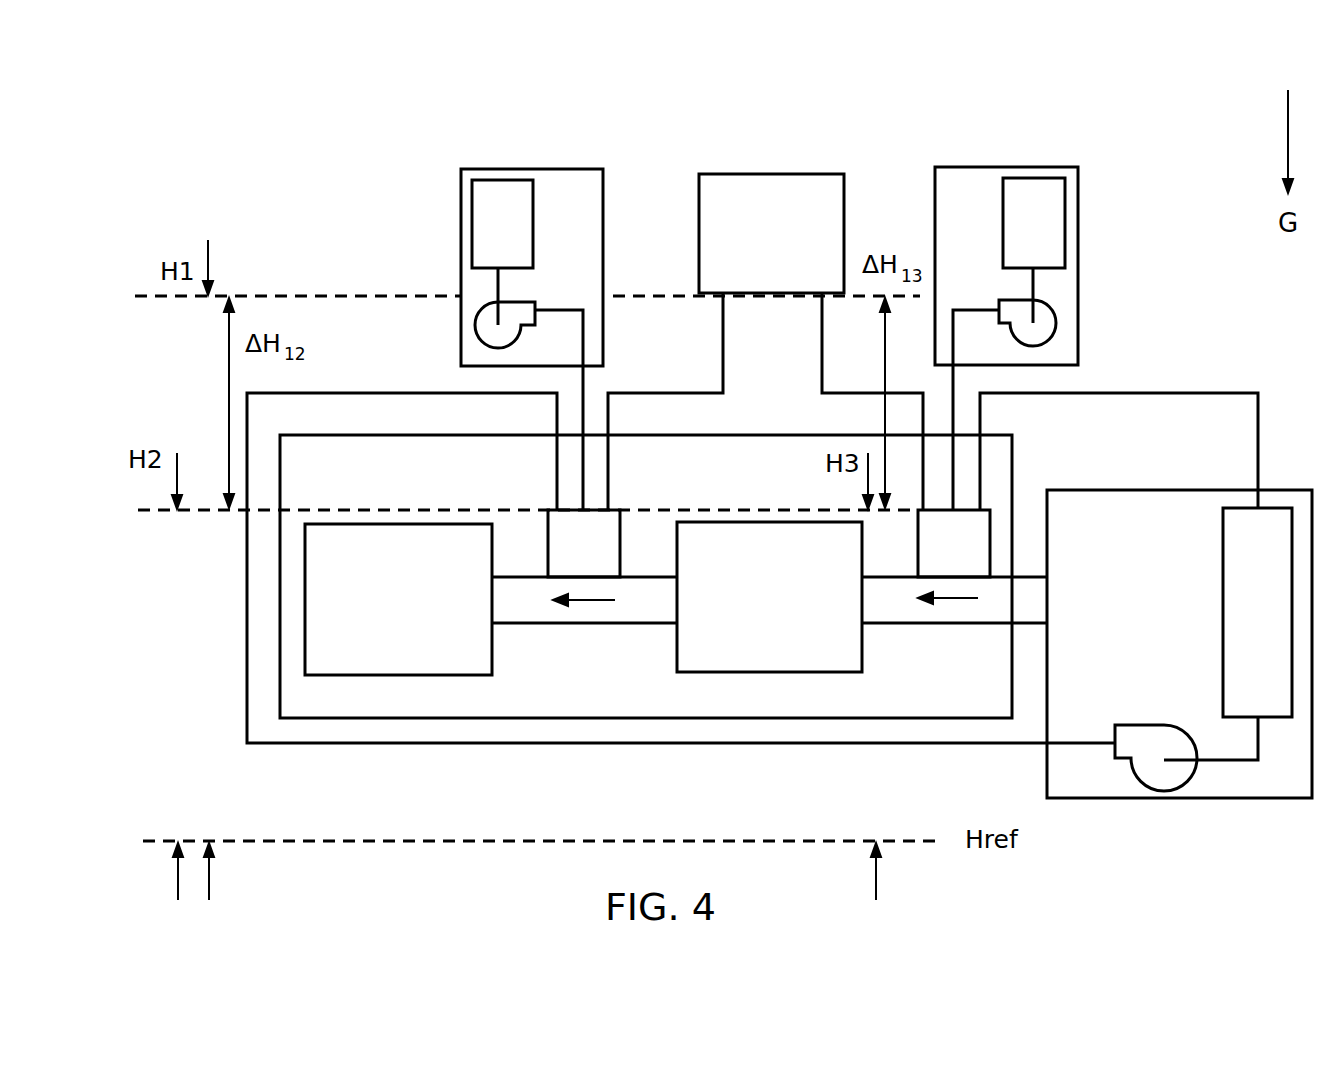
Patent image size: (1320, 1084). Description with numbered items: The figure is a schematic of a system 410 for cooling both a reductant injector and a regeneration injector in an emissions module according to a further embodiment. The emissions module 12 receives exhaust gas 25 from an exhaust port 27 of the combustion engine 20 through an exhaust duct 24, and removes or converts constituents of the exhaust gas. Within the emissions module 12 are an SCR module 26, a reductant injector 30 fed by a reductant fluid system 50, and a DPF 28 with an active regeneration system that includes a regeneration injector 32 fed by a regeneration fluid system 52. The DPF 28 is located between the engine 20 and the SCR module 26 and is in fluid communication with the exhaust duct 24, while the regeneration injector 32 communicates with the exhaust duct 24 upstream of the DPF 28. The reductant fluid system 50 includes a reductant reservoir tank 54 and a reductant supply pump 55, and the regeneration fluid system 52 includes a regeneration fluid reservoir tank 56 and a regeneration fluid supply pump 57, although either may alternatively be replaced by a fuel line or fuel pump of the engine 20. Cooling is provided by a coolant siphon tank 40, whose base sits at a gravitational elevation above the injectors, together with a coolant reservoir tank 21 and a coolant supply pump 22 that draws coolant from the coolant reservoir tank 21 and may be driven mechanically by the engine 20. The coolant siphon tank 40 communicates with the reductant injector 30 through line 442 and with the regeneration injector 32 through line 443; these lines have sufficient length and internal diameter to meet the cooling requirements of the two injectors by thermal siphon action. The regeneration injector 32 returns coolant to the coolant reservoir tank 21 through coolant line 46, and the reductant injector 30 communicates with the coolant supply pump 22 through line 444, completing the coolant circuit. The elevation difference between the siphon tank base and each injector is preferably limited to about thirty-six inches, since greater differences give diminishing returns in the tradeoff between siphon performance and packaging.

The system 410 is at (398, 191).
The emissions module 12 is at (338, 473).
The combustion engine 20 is at (1139, 583).
The coolant reservoir tank 21 is at (1257, 612).
The coolant supply pump 22 is at (1135, 782).
The exhaust duct 24 is at (528, 625).
The exhaust gas 25 is at (592, 605).
The SCR module 26 is at (398, 599).
The exhaust port 27 is at (1045, 590).
The DPF 28 is at (769, 597).
The reductant injector 30 is at (584, 543).
The regeneration injector 32 is at (954, 543).
The coolant siphon tank 40 is at (740, 174).
The coolant line 46 is at (1210, 393).
The reductant fluid system 50 is at (503, 168).
The regeneration fluid system 52 is at (978, 167).
The reductant reservoir tank 54 is at (502, 224).
The reductant supply pump 55 is at (478, 338).
The regeneration fluid reservoir tank 56 is at (1034, 223).
The regeneration fluid supply pump 57 is at (1060, 322).
The line 442 is at (725, 372).
The line 443 is at (822, 372).
The line 444 is at (476, 745).